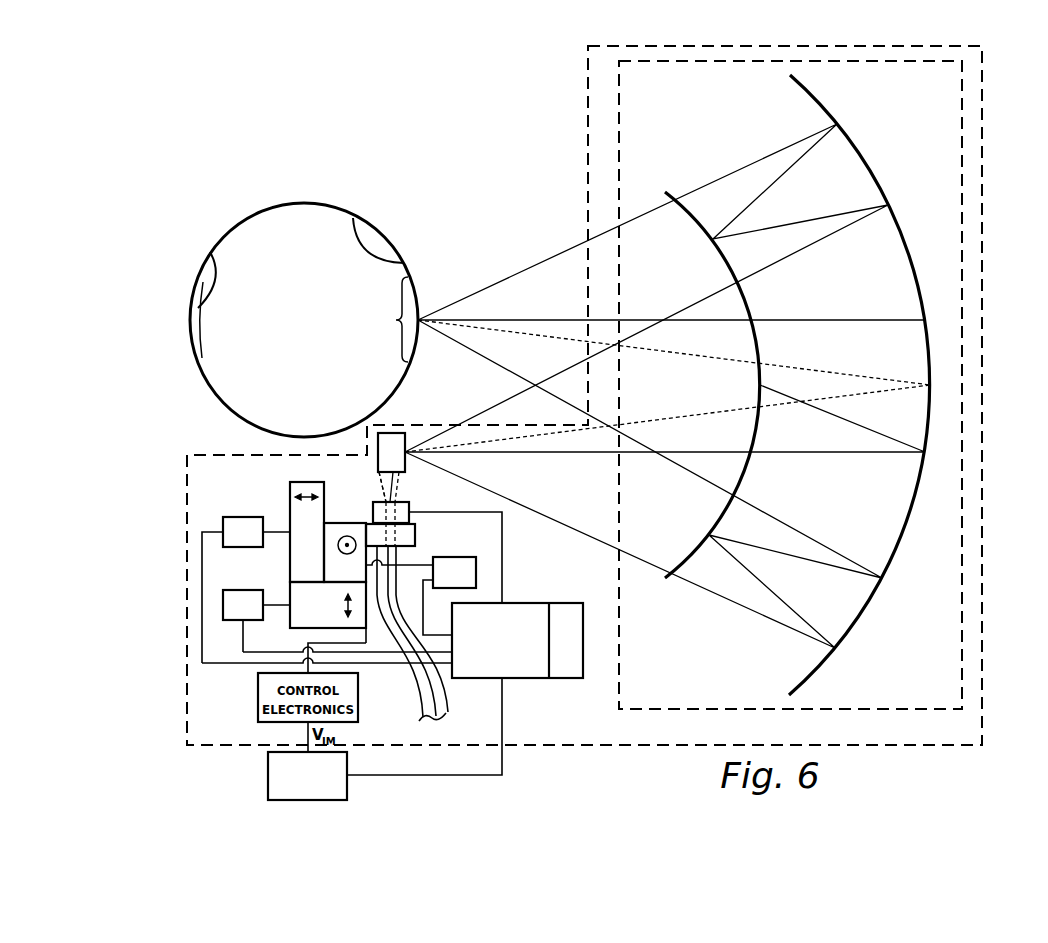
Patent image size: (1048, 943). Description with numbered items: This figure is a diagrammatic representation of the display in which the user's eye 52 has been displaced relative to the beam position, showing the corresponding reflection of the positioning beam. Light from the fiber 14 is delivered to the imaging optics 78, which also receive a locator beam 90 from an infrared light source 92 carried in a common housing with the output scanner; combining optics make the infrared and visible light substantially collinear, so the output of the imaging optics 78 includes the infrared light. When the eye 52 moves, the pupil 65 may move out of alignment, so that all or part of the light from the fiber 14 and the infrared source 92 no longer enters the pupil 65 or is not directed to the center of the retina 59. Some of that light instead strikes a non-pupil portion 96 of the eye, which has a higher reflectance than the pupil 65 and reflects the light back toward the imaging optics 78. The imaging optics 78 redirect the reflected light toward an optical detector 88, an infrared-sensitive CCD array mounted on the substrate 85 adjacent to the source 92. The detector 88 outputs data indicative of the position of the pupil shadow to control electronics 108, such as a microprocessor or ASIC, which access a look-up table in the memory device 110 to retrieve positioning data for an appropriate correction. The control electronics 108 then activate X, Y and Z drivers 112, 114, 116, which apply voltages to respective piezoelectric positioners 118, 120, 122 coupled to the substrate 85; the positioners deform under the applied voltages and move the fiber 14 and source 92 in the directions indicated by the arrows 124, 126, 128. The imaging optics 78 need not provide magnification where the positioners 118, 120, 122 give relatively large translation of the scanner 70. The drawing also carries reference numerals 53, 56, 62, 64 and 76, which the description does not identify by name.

The fiber 14 is at (438, 710).
The user's eye 52 is at (304, 204).
The scanned light beam 53 is at (486, 289).
The image source 56 is at (268, 776).
The retina 59 is at (222, 262).
The first curved mirror 62 is at (684, 208).
The second curved mirror 64 is at (856, 142).
The pupil 65 is at (385, 232).
The scanner 70 is at (982, 275).
The scanner 76 is at (397, 432).
The imaging optics 78 is at (962, 470).
The substrate 85 is at (416, 538).
The optical detector 88 is at (410, 514).
The locator beam 90 is at (533, 335).
The infrared light source 92 is at (377, 488).
The non-pupil portion of the eye 96 is at (396, 320).
The control electronics 108 is at (517, 640).
The memory device 110 is at (585, 668).
The X driver 112 is at (222, 605).
The Y driver 114 is at (477, 573).
The Z driver 116 is at (222, 519).
The piezoelectric positioner 118 is at (290, 630).
The piezoelectric positioner 120 is at (342, 522).
The piezoelectric positioner 122 is at (290, 492).
The arrow 124 is at (360, 607).
The arrow 126 is at (338, 548).
The arrow 128 is at (303, 492).